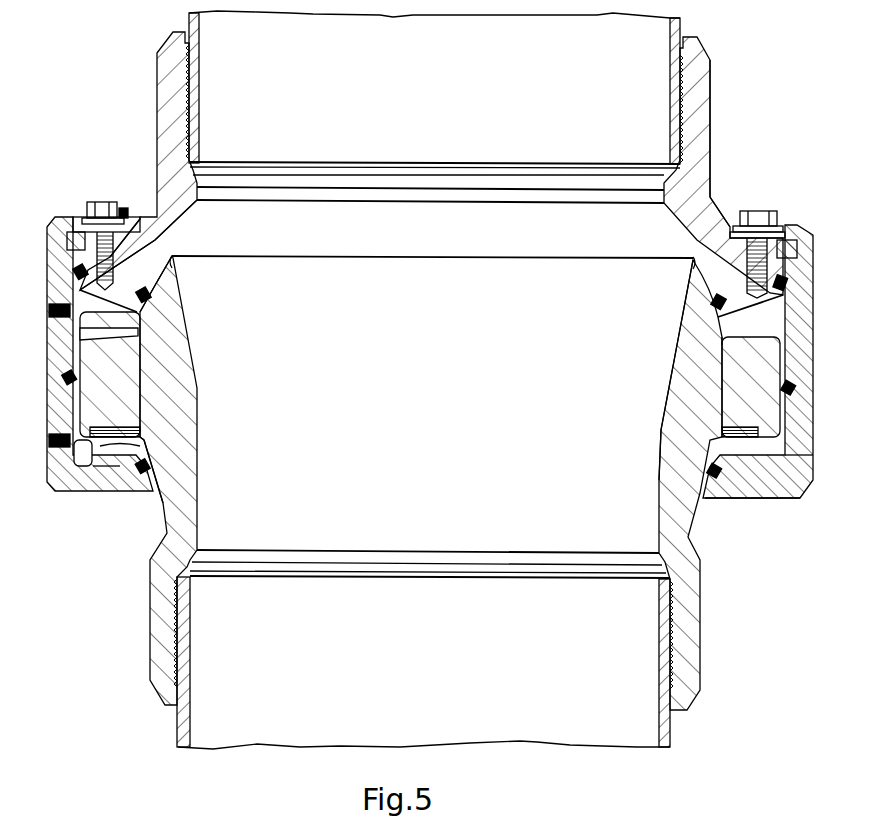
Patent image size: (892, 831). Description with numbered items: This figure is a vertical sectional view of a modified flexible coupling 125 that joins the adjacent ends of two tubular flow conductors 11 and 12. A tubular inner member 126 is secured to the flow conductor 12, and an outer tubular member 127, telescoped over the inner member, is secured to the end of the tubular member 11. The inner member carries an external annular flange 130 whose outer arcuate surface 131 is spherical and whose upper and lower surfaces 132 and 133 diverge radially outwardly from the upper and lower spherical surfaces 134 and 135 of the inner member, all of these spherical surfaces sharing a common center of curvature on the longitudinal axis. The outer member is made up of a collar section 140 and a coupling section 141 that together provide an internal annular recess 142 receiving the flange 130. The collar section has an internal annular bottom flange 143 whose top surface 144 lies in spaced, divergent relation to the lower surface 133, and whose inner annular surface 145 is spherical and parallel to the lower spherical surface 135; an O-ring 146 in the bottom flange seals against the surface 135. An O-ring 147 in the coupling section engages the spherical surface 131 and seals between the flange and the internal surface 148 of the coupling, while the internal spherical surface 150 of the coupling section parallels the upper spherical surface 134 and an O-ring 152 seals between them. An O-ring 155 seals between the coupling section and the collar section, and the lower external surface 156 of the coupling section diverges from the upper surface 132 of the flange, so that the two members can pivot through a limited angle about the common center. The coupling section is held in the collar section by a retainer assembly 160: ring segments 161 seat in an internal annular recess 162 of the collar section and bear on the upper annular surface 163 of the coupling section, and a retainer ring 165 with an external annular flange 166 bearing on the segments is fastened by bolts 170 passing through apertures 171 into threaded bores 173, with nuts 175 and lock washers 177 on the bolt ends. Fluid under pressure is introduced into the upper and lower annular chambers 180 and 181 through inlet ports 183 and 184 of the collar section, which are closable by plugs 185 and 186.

The tubular member 11 is at (683, 32).
The flow conductor 12 is at (672, 740).
The flexible coupling 125 is at (732, 69).
The tubular inner member 126 is at (705, 582).
The outer tubular member 127 is at (713, 139).
The external annular flange 130 is at (130, 403).
The outer arcuate surface 131 is at (777, 433).
The upper surface 132 is at (738, 334).
The lower surface 133 is at (710, 437).
The upper spherical surface 134 is at (710, 330).
The lower spherical surface 135 is at (700, 498).
The collar section 140 is at (759, 500).
The coupling section 141 is at (706, 198).
The internal annular recess 142 is at (786, 480).
The internal annular bottom flange 143 is at (130, 493).
The top surface 144 is at (143, 438).
The inner annular surface 145 is at (149, 468).
The O-ring 146 is at (150, 458).
The O-ring 147 is at (77, 378).
The internal surface 148 is at (117, 482).
The internal spherical surface 150 is at (252, 238).
The O-ring 152 is at (150, 297).
The O-ring 155 is at (47, 247).
The lower external surface 156 is at (143, 307).
The retainer assembly 160 is at (116, 188).
The ring segments 161 is at (74, 216).
The internal annular recess 162 is at (788, 241).
The upper annular surface 163 is at (786, 238).
The retainer ring 165 is at (733, 237).
The external annular flange 166 is at (781, 225).
The bolts 170 is at (753, 211).
The apertures 171 is at (140, 229).
The threaded bores 173 is at (172, 247).
The nuts 175 is at (98, 192).
The lock washers 177 is at (122, 216).
The upper annular chamber 180 is at (710, 313).
The lower annular chamber 181 is at (140, 428).
The inlet port 183 is at (70, 313).
The inlet port 184 is at (90, 483).
The plug 185 is at (75, 337).
The plug 186 is at (47, 480).